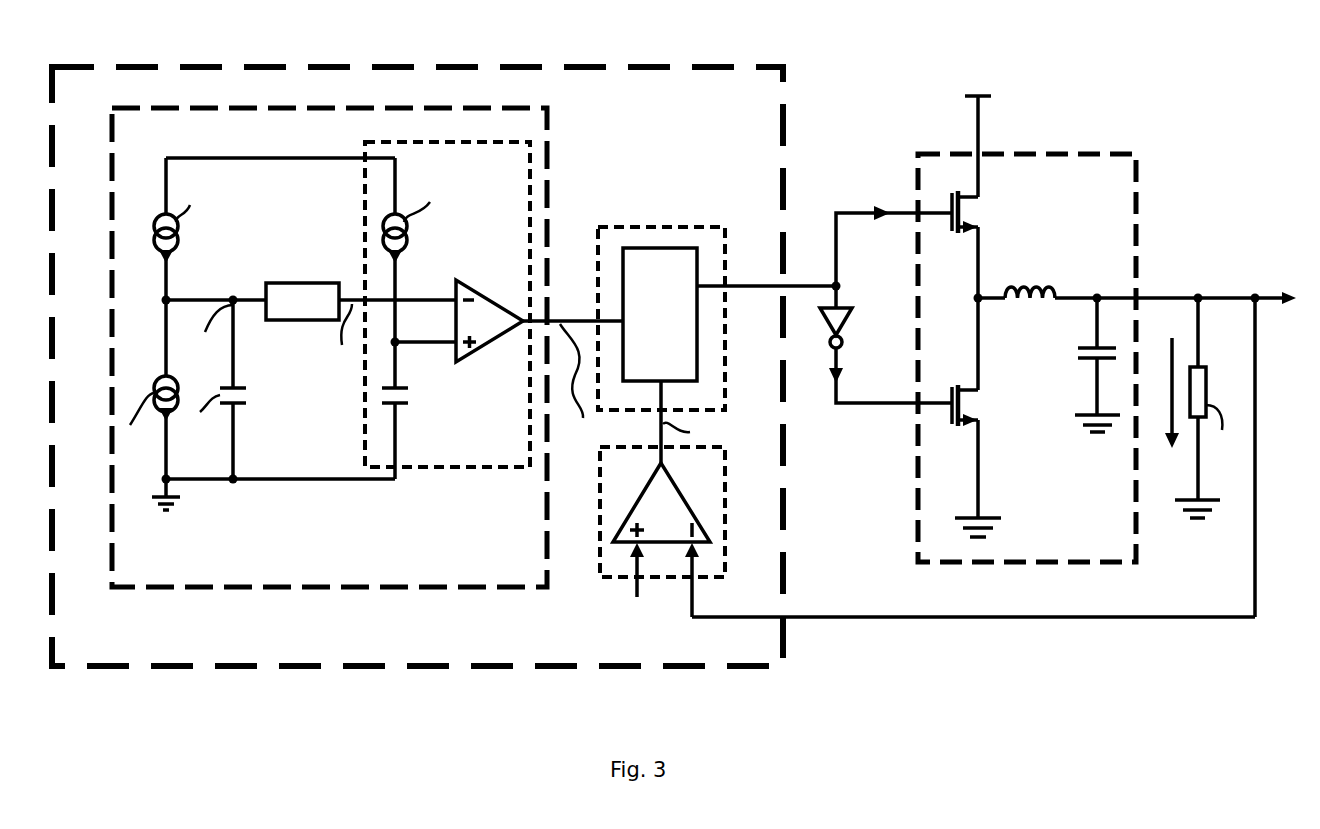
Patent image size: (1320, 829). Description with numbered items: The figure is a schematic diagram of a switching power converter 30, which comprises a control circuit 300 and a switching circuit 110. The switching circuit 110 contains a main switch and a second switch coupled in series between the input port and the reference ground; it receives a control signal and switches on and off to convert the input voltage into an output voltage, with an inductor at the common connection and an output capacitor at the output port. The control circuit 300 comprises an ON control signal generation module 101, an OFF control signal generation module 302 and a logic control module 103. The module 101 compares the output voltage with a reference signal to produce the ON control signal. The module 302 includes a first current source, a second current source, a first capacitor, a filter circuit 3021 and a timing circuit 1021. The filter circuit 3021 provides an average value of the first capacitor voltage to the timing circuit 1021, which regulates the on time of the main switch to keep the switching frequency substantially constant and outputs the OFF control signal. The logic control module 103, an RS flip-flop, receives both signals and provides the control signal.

The switching power converter 30 is at (1203, 129).
The control circuit 300 is at (786, 112).
The OFF control signal generation module 302 is at (277, 589).
The filter circuit 3021 is at (310, 282).
The timing circuit 1021 is at (528, 203).
The logic control module 103 is at (684, 226).
The ON control signal generation module 101 is at (725, 553).
The switching circuit 110 is at (1137, 194).